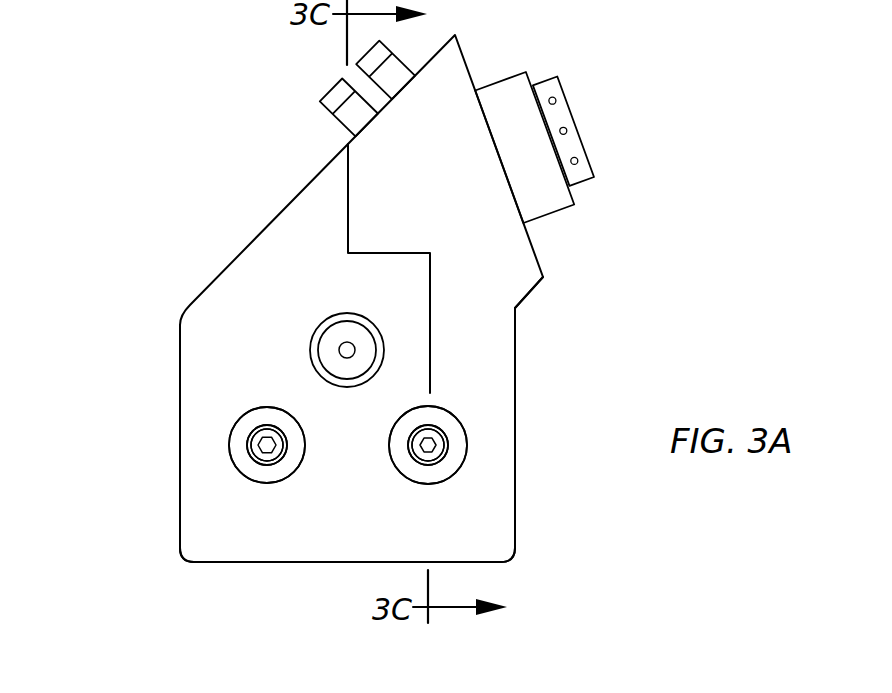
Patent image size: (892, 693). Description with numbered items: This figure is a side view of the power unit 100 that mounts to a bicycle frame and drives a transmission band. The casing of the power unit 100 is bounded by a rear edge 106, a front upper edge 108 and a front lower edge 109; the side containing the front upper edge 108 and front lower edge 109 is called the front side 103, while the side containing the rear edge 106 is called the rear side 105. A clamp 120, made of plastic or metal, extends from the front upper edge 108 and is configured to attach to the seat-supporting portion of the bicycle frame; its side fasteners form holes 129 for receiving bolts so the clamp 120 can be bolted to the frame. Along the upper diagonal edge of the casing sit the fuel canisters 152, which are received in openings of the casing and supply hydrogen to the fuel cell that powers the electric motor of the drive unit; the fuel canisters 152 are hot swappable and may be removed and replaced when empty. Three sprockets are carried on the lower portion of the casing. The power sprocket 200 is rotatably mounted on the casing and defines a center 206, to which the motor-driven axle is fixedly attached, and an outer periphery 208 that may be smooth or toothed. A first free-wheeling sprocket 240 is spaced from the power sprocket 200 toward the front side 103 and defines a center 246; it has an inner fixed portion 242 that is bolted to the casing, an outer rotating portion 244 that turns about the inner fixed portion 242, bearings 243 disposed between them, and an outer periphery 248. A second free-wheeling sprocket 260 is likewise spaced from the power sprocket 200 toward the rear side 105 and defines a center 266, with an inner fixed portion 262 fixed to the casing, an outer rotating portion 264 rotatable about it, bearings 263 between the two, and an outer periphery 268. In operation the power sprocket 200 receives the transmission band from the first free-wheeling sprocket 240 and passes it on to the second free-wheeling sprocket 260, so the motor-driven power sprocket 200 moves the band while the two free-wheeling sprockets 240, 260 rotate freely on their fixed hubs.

The power unit 100 is at (143, 110).
The front side 103 is at (547, 338).
The rear side 105 is at (146, 337).
The rear edge 106 is at (178, 520).
The front upper edge 108 is at (540, 256).
The front lower edge 109 is at (515, 521).
The clamp 120 is at (503, 90).
The holes 129 is at (576, 158).
The fuel canisters 152 is at (358, 50).
The power sprocket 200 is at (333, 362).
The center 206 is at (320, 343).
The outer periphery 208 is at (347, 313).
The first free-wheeling sprocket 240 is at (465, 473).
The inner fixed portion 242 is at (418, 459).
The bearings 243 is at (428, 463).
The outer rotating portion 244 is at (443, 468).
The center 246 is at (432, 447).
The outer periphery 248 is at (440, 408).
The second free-wheeling sprocket 260 is at (232, 470).
The inner fixed portion 262 is at (275, 456).
The bearings 263 is at (265, 463).
The outer rotating portion 264 is at (252, 467).
The center 266 is at (258, 445).
The outer periphery 268 is at (255, 410).